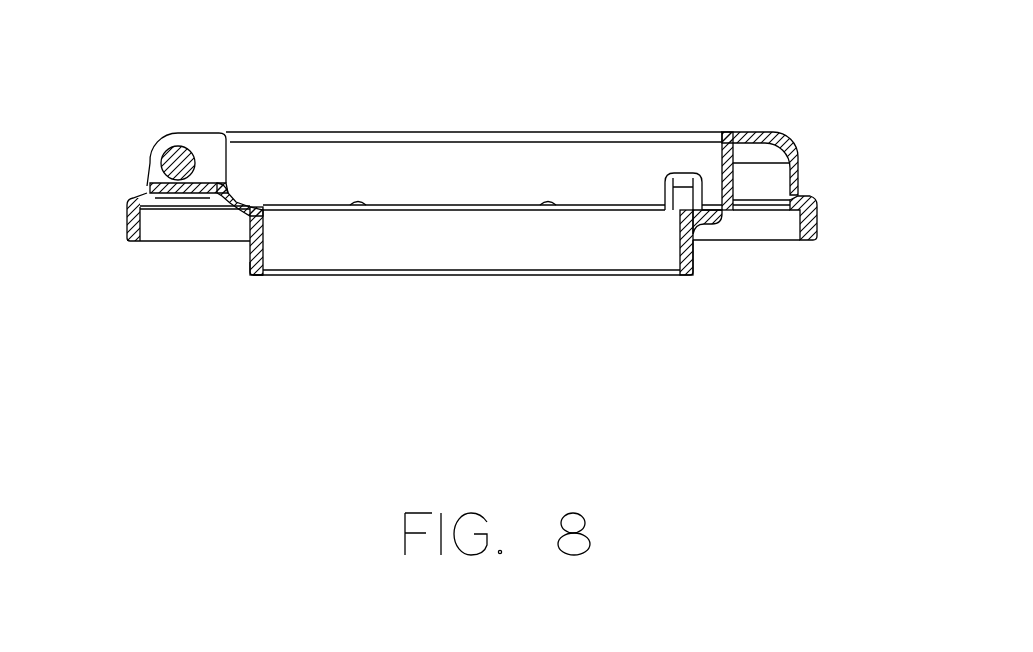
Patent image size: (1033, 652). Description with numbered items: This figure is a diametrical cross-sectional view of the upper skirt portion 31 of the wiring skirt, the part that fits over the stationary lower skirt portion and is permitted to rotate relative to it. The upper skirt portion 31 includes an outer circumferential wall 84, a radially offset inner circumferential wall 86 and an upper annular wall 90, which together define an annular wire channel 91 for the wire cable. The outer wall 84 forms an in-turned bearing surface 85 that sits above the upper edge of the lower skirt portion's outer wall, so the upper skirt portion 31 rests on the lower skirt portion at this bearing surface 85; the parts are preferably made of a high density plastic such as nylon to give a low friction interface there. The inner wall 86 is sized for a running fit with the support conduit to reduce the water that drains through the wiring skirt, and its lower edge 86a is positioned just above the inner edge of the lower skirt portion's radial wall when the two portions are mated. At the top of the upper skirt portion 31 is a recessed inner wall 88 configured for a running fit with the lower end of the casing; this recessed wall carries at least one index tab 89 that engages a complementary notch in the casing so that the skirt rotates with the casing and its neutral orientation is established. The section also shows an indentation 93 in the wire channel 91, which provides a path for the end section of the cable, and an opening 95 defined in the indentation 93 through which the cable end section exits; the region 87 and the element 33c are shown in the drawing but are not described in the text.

The upper skirt portion 31 is at (477, 118).
The boss body 33c is at (193, 140).
The outer circumferential wall 84 is at (819, 232).
The in-turned bearing surface 85 is at (801, 241).
The inner circumferential wall 86 is at (265, 245).
The lower edge 86a is at (263, 276).
The lower housing cavity 87 is at (580, 245).
The recessed inner wall 88 is at (720, 163).
The index tab 89 is at (685, 173).
The upper annular wall 90 is at (753, 128).
The wire channel 91 is at (777, 180).
The indentation 93 is at (148, 182).
The opening 95 is at (183, 142).